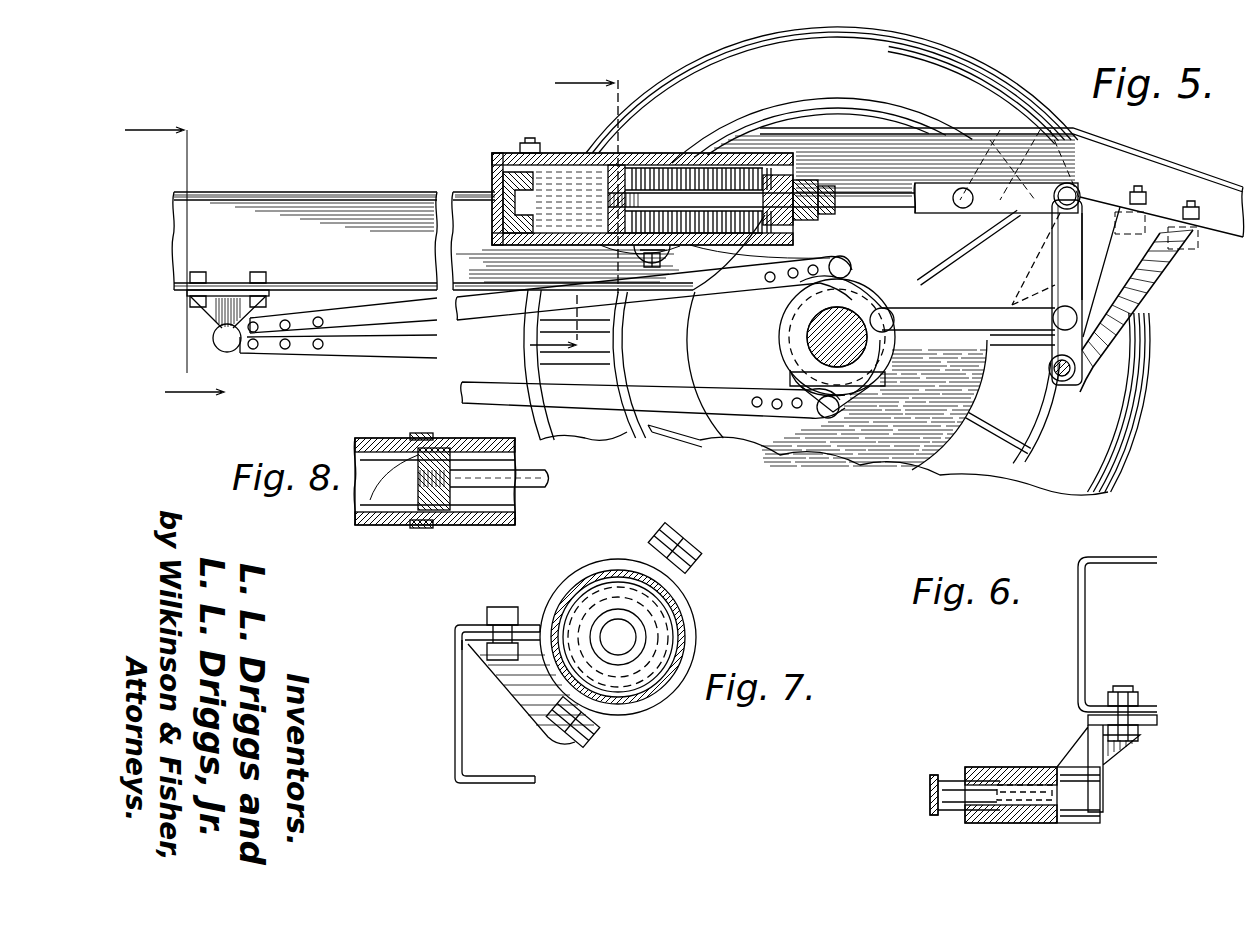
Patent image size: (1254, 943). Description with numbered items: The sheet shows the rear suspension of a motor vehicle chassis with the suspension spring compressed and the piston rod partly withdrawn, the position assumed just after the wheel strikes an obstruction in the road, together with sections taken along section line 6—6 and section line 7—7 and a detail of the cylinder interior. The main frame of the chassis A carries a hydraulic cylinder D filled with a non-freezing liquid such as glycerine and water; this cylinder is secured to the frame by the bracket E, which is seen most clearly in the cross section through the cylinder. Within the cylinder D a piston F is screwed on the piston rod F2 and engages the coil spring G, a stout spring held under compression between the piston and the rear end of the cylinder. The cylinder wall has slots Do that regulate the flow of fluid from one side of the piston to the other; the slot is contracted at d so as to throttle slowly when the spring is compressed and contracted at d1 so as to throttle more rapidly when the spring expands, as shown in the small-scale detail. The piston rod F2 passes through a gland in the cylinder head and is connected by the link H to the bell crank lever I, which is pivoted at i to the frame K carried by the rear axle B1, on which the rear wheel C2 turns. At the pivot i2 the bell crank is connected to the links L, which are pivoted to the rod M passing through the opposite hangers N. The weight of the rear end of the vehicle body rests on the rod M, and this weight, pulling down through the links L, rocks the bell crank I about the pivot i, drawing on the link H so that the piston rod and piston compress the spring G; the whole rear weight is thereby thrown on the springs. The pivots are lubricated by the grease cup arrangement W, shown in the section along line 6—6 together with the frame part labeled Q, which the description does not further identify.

In FIG. 5, the main frame of the chassis A is at (462, 196).
In FIG. 5, the section line 6— 6 is at (182, 259).
In FIG. 5, the section line 7— 7 is at (577, 212).
In FIG. 5, the ball bracket Q is at (214, 336).
In FIG. 5, the hydraulic cylinder D is at (552, 160).
In FIG. 5, the slots Do is at (518, 202).
In FIG. 5, the coil spring G is at (690, 170).
In FIG. 5, the piston F is at (640, 185).
In FIG. 5, the piston rod F2 is at (872, 195).
In FIG. 5, the bracket E is at (660, 158).
In FIG. 5, the link H is at (1042, 182).
In FIG. 5, the bell crank lever I is at (1073, 240).
In FIG. 5, the links L is at (1083, 340).
In FIG. 5, the hangers N is at (1172, 285).
In FIG. 5, the rod M is at (1068, 380).
In FIG. 5, the pivot i is at (888, 315).
In FIG. 5, the pivot i2 is at (1050, 352).
In FIG. 5, the rear axle B1 is at (810, 338).
In FIG. 5, the frame K is at (800, 374).
In FIG. 5, the rear wheel C2 is at (1112, 390).
In FIG. 8, the contracted portion of slot d is at (497, 490).
In FIG. 8, the contracted portion of slot d1 is at (360, 495).
In FIG. 6, the grease cup arrangement W is at (935, 770).